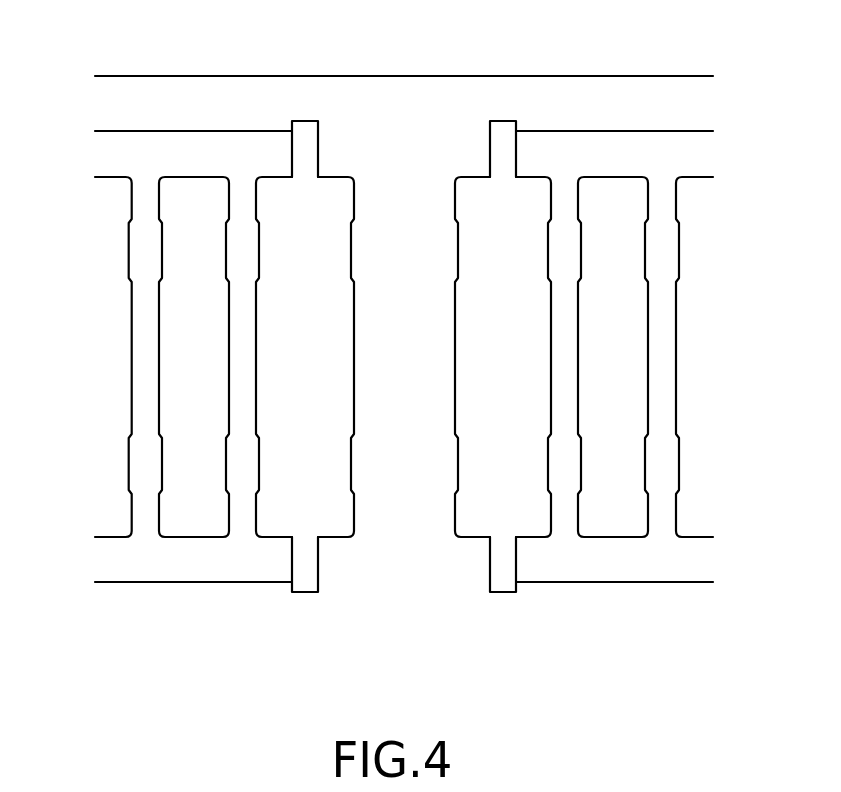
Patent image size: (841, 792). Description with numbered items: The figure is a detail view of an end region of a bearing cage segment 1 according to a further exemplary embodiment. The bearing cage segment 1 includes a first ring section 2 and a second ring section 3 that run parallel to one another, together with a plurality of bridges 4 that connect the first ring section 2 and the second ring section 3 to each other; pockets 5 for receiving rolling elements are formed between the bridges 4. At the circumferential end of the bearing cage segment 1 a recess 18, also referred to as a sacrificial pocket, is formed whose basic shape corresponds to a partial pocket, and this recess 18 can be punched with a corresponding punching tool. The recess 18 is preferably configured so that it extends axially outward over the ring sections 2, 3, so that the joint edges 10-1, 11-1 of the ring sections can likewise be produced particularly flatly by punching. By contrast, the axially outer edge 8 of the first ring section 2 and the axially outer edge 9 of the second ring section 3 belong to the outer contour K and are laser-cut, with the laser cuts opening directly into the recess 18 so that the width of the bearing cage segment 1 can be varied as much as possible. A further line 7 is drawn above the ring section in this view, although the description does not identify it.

The bearing cage segment 1 is at (122, 155).
The first ring section 2 is at (188, 157).
The second ring section 3 is at (187, 562).
The bridges 4 is at (240, 272).
The pockets 5 is at (110, 350).
The cell edge line 7 is at (447, 102).
The axially outer edge of the first ring section 8 is at (237, 122).
The axially outer edge of the second ring section 9 is at (252, 594).
The joint edge 10-1 is at (300, 150).
The joint edge 11-1 is at (300, 559).
The recess 18 is at (295, 328).